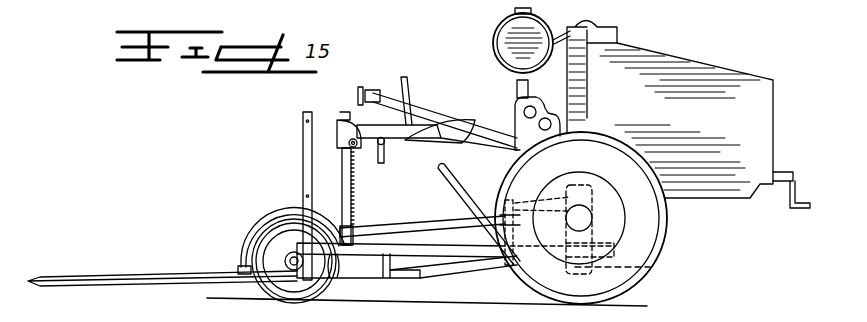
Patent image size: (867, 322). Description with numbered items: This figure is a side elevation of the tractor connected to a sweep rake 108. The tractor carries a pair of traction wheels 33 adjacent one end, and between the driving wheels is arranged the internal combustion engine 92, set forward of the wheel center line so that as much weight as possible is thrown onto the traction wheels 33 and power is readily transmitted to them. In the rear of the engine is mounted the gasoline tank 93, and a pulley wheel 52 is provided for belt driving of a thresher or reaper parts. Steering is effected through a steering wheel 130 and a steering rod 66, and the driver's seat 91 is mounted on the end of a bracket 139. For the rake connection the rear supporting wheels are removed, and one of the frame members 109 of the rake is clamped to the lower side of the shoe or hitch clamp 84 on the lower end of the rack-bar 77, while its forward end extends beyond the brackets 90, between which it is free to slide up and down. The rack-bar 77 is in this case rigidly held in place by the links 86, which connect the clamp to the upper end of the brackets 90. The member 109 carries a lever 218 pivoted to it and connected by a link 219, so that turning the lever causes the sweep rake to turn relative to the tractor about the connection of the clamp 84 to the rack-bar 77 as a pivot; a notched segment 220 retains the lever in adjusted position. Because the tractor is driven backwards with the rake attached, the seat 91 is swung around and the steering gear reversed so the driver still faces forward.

The gasoline tank 93 is at (522, 33).
The internal combustion engine 92 is at (677, 77).
The steering wheel 130 is at (404, 78).
The steering rod 66 is at (413, 125).
The driver's seat 91 is at (447, 132).
The pulley wheel 52 is at (530, 103).
The bracket 139 is at (385, 162).
The lever 218 is at (457, 187).
The link 219 is at (511, 200).
The hitch clamp 84 is at (340, 237).
The rack-bar 77 is at (347, 191).
The frame member 109 is at (399, 250).
The links 86 is at (455, 218).
The sweep rake 108 is at (207, 272).
The notched segment 220 is at (523, 270).
The traction wheels 33 is at (668, 232).
The brackets 90 is at (658, 266).